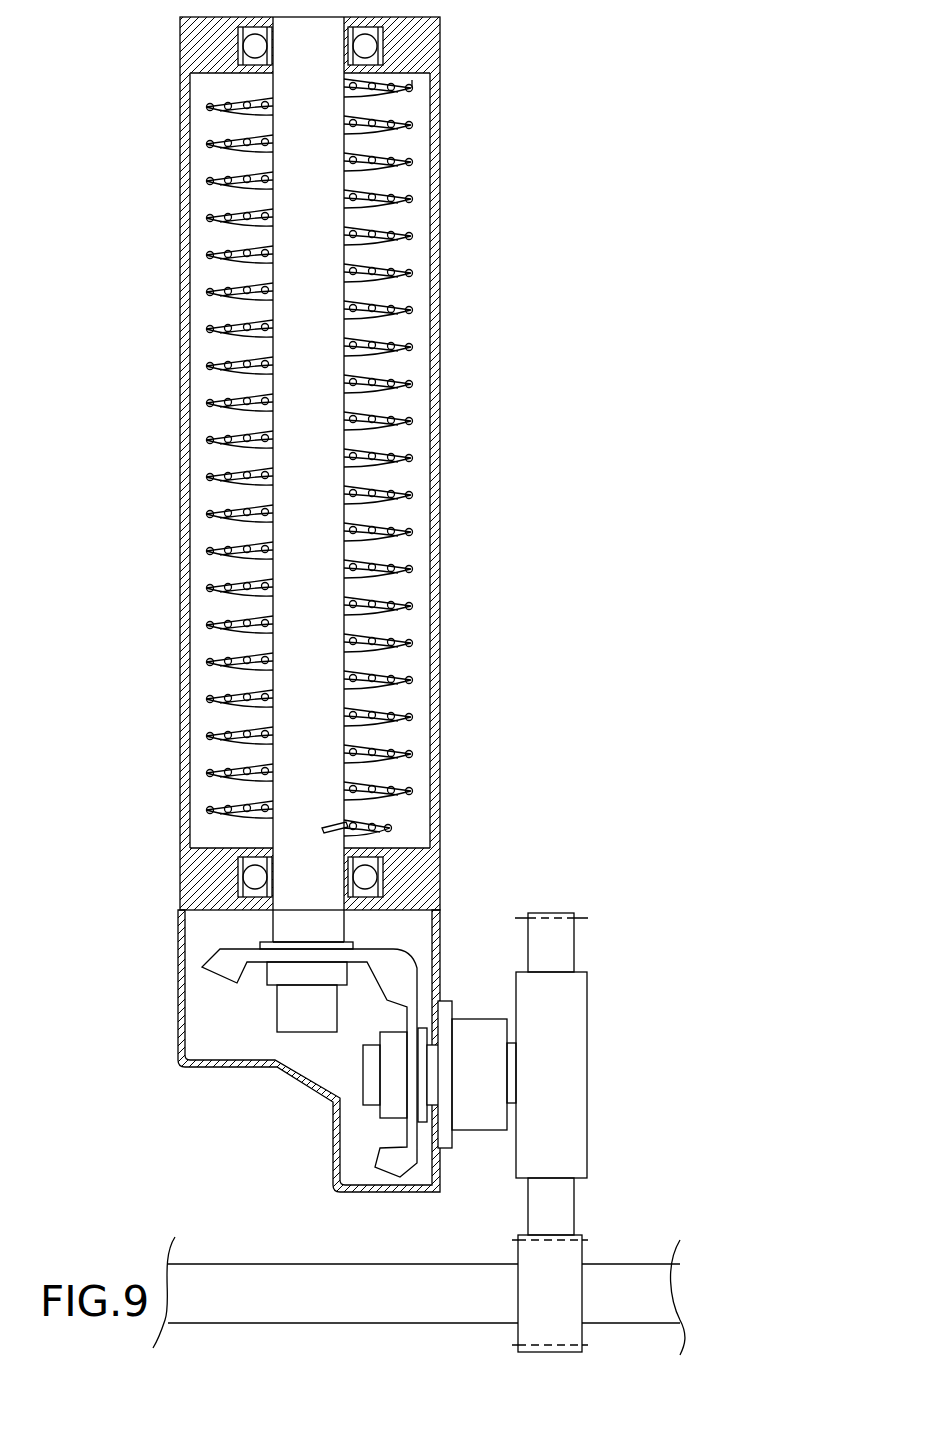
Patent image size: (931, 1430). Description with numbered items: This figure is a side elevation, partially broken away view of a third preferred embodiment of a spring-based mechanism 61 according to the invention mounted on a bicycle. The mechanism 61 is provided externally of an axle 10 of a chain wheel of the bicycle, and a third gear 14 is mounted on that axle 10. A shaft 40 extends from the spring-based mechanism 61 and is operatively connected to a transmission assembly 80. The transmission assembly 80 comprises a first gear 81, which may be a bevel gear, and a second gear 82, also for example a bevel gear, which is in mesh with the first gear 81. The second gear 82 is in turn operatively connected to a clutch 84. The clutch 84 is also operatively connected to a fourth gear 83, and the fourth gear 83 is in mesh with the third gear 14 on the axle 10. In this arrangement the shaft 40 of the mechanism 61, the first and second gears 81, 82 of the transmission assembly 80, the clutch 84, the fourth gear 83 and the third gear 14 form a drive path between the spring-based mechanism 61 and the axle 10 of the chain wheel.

The spring-based mechanism 61 is at (453, 612).
The shaft 40 is at (285, 923).
The transmission assembly 80 is at (250, 1051).
The first gear 81 is at (218, 967).
The second gear 82 is at (400, 1157).
The fourth gear 83 is at (563, 942).
The clutch 84 is at (470, 1030).
The axle 10 is at (625, 1278).
The third gear 14 is at (565, 1292).